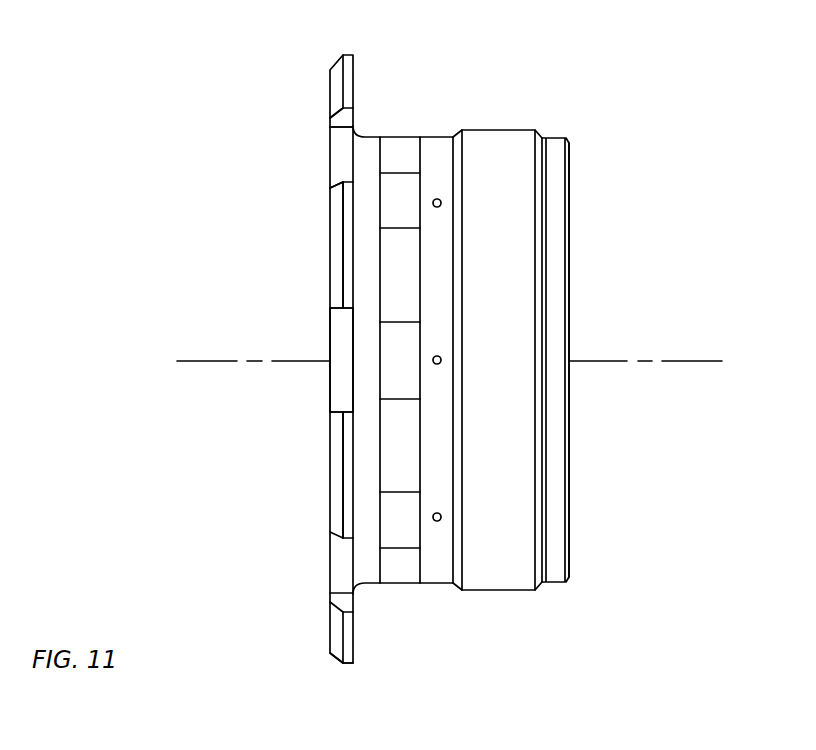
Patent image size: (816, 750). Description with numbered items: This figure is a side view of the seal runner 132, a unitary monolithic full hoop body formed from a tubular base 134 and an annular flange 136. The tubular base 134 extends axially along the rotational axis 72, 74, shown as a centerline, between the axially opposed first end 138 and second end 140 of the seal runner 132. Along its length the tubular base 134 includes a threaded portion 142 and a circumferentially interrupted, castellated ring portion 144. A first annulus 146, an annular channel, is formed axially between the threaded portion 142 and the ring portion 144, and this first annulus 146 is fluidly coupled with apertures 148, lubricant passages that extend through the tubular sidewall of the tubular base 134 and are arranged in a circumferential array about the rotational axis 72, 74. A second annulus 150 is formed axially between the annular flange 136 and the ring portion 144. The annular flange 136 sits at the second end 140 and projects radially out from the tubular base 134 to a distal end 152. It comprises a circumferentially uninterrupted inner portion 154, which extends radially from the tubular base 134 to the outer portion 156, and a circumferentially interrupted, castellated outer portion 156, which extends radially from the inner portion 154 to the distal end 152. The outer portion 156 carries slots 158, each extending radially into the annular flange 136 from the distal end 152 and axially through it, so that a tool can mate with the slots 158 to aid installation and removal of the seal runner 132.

The seal runner 132 is at (632, 103).
The tubular base 134 is at (553, 130).
The annular flange 136 is at (320, 93).
The first end 138 is at (572, 240).
The second end 140 is at (330, 240).
The threaded portion 142 is at (500, 128).
The ring portion 144 is at (400, 134).
The first annulus 146 is at (432, 594).
The apertures 148 is at (441, 208).
The second annulus 150 is at (367, 597).
The distal end 152 is at (343, 665).
The inner portion 154 is at (324, 383).
The outer portion 156 is at (327, 470).
The slots 158 is at (336, 150).
The rotational axis 72 is at (469, 410).
The rotational axis 74 is at (713, 363).